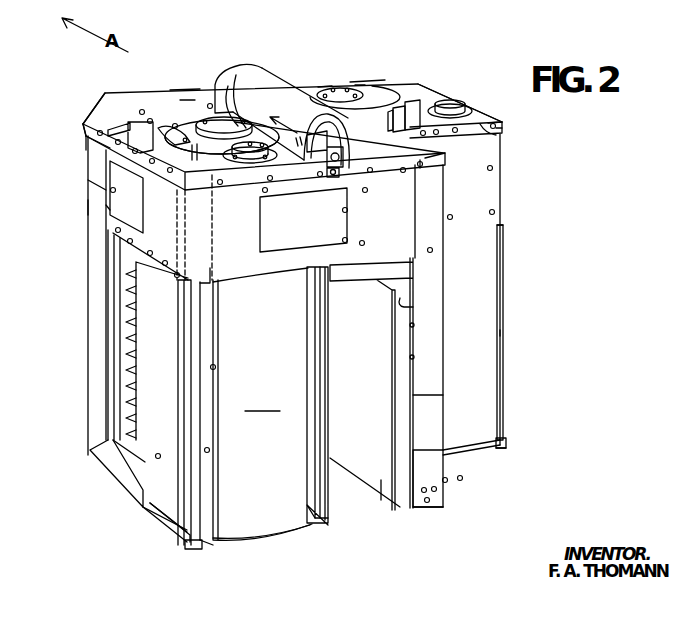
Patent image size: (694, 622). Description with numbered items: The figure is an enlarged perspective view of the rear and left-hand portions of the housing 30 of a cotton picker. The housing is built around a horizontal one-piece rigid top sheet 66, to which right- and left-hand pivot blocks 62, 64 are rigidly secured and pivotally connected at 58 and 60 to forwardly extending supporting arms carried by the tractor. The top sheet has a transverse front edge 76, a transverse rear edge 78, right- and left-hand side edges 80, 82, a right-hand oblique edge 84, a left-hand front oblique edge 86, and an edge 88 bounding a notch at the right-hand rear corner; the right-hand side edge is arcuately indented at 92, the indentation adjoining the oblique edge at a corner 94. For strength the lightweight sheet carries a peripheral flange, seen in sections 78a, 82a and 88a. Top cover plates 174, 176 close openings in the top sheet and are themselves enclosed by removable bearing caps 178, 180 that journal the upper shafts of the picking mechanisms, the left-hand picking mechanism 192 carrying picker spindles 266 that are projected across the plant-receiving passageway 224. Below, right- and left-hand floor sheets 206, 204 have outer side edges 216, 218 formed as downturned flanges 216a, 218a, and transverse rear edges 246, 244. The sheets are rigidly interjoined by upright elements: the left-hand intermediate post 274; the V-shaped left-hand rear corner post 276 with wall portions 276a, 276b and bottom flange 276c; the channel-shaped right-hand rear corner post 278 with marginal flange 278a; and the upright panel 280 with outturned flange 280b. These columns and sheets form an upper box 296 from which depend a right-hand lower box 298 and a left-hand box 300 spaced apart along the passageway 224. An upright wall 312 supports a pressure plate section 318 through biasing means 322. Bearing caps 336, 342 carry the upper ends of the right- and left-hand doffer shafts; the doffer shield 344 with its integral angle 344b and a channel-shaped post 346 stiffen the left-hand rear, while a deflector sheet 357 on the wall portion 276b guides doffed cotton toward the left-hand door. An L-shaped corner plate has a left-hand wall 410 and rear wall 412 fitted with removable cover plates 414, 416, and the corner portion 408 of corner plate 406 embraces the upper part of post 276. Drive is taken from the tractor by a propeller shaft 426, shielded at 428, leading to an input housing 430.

The housing 30 is at (370, 77).
The pivotal connection 58 is at (400, 112).
The pivotal connection 60 is at (87, 122).
The right-hand pivot block 62 is at (412, 116).
The left-hand pivot block 64 is at (140, 128).
The top sheet 66 is at (188, 100).
The transverse front edge 76 is at (180, 93).
The transverse rear edge 78 is at (437, 163).
The flange section 78a is at (428, 170).
The right-hand outer side edge 80 is at (470, 121).
The left-hand outer side edge 82 is at (96, 128).
The flange section 82a is at (100, 137).
The right-hand oblique edge 84 is at (326, 86).
The left-hand front oblique edge 86 is at (95, 110).
The notch edge 88 is at (490, 133).
The flange section 88a is at (503, 127).
The arcuate indentation 92 is at (397, 110).
The corner 94 is at (390, 93).
The top cover plate 174 is at (367, 78).
The top cover plate 176 is at (190, 130).
The bearing cap 178 is at (339, 88).
The bearing cap 180 is at (227, 127).
The left-hand picking mechanism 192 is at (121, 380).
The left-hand floor sheet 204 is at (197, 551).
The right-hand floor sheet 206 is at (500, 446).
The outer marginal side edge 216 is at (504, 440).
The downturned flange 216a is at (505, 445).
The outer side edge 218 is at (168, 528).
The downturned flange 218a is at (182, 538).
The plant-receiving passageway 224 is at (345, 497).
The transverse rear edge 244 is at (313, 522).
The transverse rear edge 246 is at (425, 505).
The picker spindles 266 is at (133, 331).
The intermediate post 274 is at (90, 206).
The left-hand rear corner post 276 is at (188, 548).
The wall portion 276a is at (201, 475).
The wall portion 276b is at (216, 535).
The bottom flange 276c is at (210, 552).
The right-hand rear corner post 278 is at (440, 470).
The upright marginal flange 278a is at (415, 402).
The upright panel 280 is at (485, 366).
The outturned flange 280b is at (503, 276).
The upper box 296 is at (72, 191).
The right-hand lower box 298 is at (488, 337).
The left-hand box 300 is at (132, 517).
The upright wall 312 is at (405, 352).
The pressure plate section 318 is at (381, 498).
The biasing means 322 is at (405, 305).
The right-hand bearing cap 336 is at (458, 102).
The upper bearing cap 342 is at (250, 161).
The doffer shield 344 is at (262, 410).
The integral angle 344b is at (310, 392).
The channel-shaped post 346 is at (330, 428).
The deflector sheet 357 is at (148, 488).
The left-hand corner plate 406 is at (232, 272).
The corner portion 408 is at (210, 272).
The left-hand wall 410 is at (108, 215).
The rear wall 412 is at (415, 236).
The removable cover plate 414 is at (118, 179).
The removable cover plate 416 is at (346, 244).
The propeller shaft 426 is at (322, 168).
The shield 428 is at (281, 82).
The input housing 430 is at (236, 72).